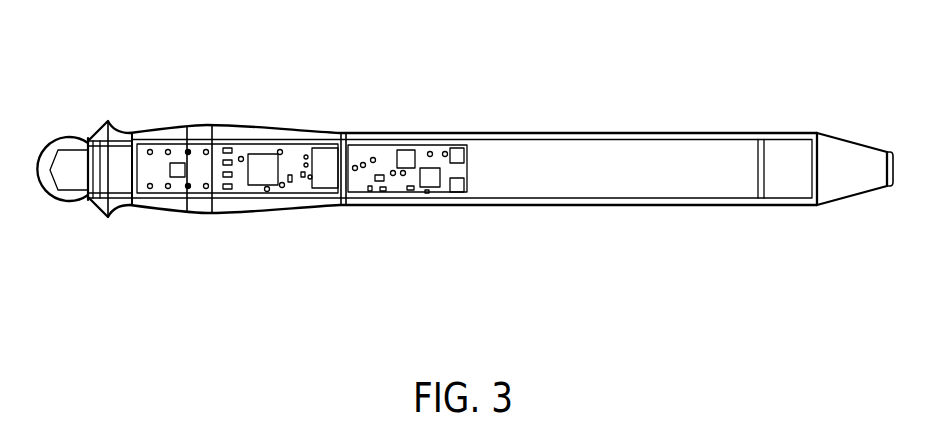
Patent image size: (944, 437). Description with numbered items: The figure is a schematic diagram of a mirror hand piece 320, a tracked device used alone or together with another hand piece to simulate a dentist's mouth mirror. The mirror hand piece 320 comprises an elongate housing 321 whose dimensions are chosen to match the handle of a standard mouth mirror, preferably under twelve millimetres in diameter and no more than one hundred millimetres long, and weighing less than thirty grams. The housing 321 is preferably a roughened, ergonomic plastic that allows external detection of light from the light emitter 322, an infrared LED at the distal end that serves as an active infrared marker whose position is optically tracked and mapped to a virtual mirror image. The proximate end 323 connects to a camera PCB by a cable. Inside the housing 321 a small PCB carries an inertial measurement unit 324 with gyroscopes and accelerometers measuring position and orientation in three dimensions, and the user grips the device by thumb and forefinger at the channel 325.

The mirror hand piece 320 is at (461, 197).
The housing 321 is at (687, 132).
The light emitter 322 is at (73, 162).
The proximate end 323 is at (888, 152).
The inertial measurement unit 324 is at (292, 165).
The channel 325 is at (160, 118).